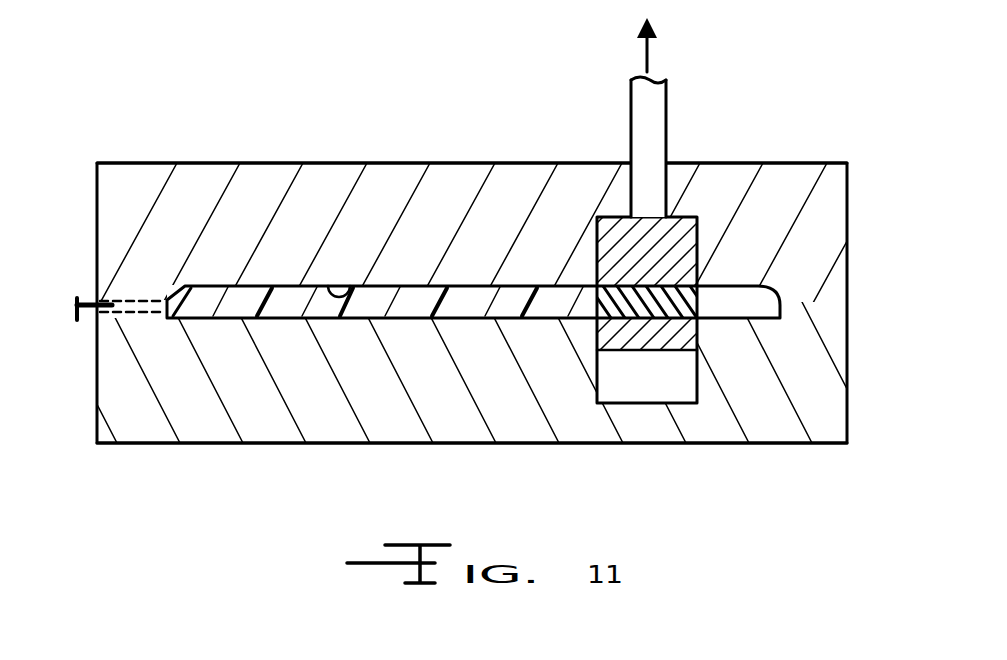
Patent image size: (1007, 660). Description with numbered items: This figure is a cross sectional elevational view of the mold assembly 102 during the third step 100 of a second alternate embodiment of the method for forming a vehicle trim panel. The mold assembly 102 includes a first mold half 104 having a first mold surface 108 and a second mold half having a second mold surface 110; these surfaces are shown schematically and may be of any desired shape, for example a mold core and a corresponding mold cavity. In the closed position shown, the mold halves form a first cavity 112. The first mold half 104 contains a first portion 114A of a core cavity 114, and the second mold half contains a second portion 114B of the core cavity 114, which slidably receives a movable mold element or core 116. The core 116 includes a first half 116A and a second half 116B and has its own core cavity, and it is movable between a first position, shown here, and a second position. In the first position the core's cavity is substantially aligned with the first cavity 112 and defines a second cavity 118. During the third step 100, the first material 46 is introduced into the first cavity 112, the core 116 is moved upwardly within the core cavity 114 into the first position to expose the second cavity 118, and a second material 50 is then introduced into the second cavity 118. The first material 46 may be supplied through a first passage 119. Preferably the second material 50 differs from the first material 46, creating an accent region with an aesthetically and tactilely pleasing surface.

The third step 100 is at (159, 45).
The mold assembly 102 is at (343, 150).
The first mold half 104 is at (113, 402).
The first material 46 is at (365, 306).
The second material 50 is at (697, 318).
The first mold surface 108 is at (255, 311).
The second mold surface 110 is at (352, 286).
The first cavity 112 is at (367, 306).
The core cavity 114 is at (712, 247).
The first portion of the core cavity 114A is at (697, 389).
The second portion of the core cavity 114B is at (677, 217).
The movable core 116 is at (626, 270).
The first half of the core 116A is at (597, 342).
The second half of the core 116B is at (603, 236).
The second cavity 118 is at (596, 328).
The first passage 119 is at (93, 322).